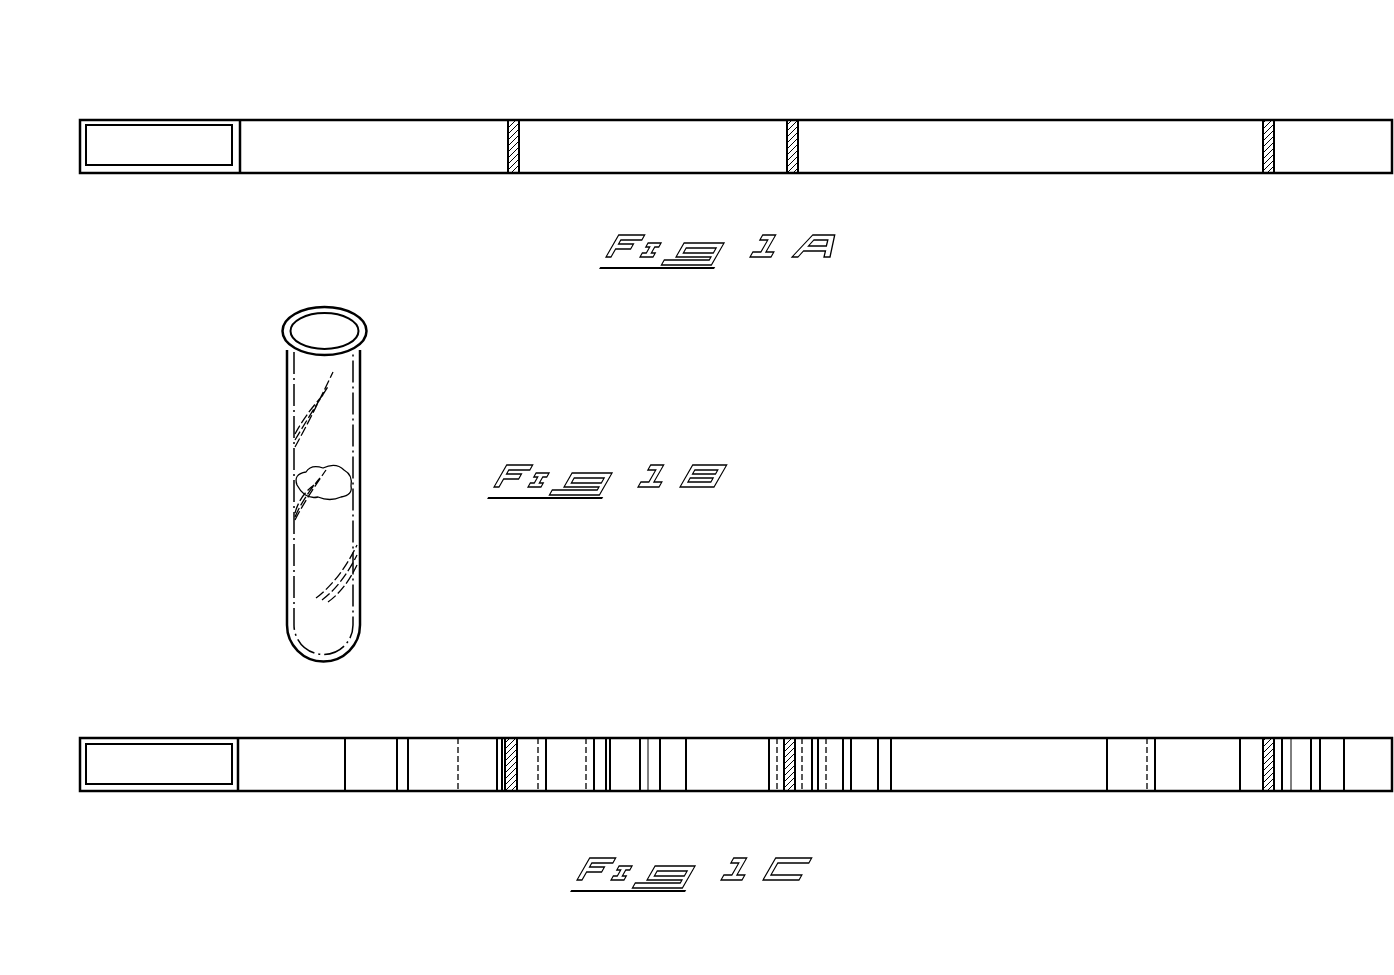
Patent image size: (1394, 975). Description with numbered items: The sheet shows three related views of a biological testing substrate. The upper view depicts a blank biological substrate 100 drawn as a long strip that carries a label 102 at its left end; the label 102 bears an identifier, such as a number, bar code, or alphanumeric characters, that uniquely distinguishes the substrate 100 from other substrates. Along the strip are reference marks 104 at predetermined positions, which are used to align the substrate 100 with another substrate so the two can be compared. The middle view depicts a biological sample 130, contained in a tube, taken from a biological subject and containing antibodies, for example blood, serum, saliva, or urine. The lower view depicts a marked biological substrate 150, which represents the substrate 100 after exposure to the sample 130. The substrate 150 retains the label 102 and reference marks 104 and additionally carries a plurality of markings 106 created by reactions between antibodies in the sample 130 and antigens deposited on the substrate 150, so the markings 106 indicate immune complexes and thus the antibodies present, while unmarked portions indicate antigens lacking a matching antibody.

In FIG. 1A, the blank biological substrate 100 is at (68, 101).
In FIG. 1A, the label 102 is at (157, 173).
In FIG. 1C, the label 102 is at (157, 791).
In FIG. 1A, the reference marks 104 is at (511, 173).
In FIG. 1C, the reference marks 104 is at (510, 791).
In FIG. 1C, the markings 106 is at (502, 733).
In FIG. 1B, the biological sample 130 is at (308, 542).
In FIG. 1C, the marked biological substrate 150 is at (68, 721).